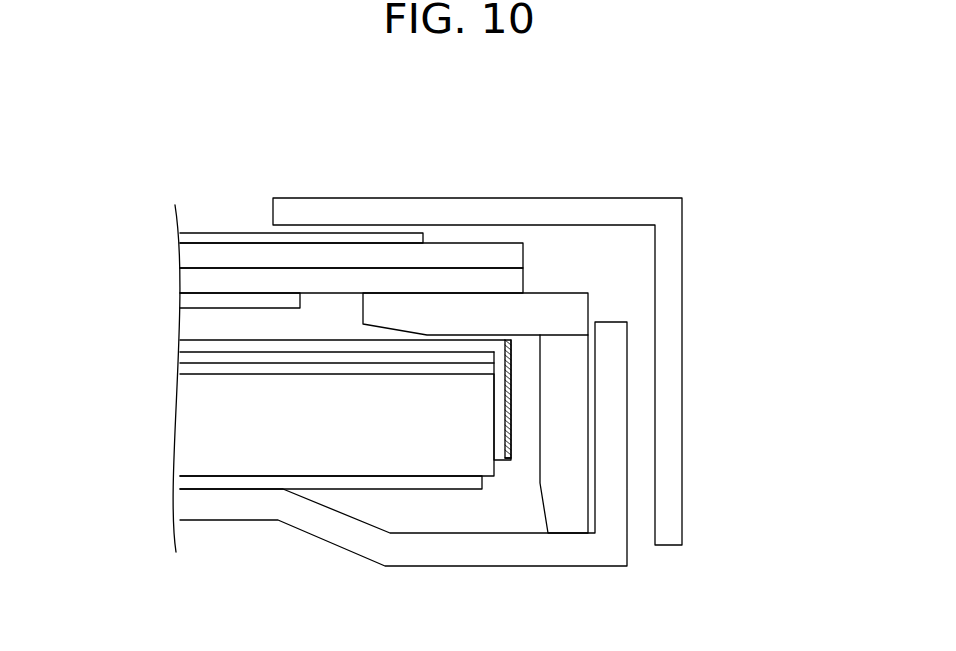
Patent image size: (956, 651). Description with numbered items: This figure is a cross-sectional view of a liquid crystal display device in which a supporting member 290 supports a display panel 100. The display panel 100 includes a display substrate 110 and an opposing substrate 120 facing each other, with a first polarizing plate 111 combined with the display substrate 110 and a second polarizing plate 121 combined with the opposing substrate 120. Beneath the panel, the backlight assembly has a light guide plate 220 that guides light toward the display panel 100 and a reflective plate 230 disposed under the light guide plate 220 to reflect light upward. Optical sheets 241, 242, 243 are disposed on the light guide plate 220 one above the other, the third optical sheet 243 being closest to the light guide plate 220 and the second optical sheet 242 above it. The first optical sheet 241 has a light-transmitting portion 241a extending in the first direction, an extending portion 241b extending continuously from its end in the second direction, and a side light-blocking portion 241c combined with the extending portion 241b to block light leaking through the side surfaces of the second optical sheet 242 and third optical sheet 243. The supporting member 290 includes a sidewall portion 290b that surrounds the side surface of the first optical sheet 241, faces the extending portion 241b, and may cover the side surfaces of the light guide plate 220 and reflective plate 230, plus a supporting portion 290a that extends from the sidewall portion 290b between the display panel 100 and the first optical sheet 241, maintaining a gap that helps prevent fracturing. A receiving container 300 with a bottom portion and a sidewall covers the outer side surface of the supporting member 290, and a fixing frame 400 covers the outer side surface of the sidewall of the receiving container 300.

The display panel 100 is at (282, 266).
The display substrate 110 is at (185, 277).
The first polarizing plate 111 is at (185, 298).
The opposing substrate 120 is at (185, 255).
The second polarizing plate 121 is at (187, 233).
The light guide plate 220 is at (178, 428).
The reflective plate 230 is at (174, 477).
The first optical sheet 241 is at (645, 400).
The light-transmitting portion 241a is at (463, 345).
The extending portion 241b is at (500, 407).
The side light-blocking portion 241c is at (510, 447).
The second optical sheet 242 is at (180, 355).
The third optical sheet 243 is at (175, 370).
The supporting member 290 is at (595, 412).
The supporting portion 290a is at (495, 314).
The sidewall portion 290b is at (573, 362).
The receiving container 300 is at (174, 505).
The fixing frame 400 is at (485, 198).